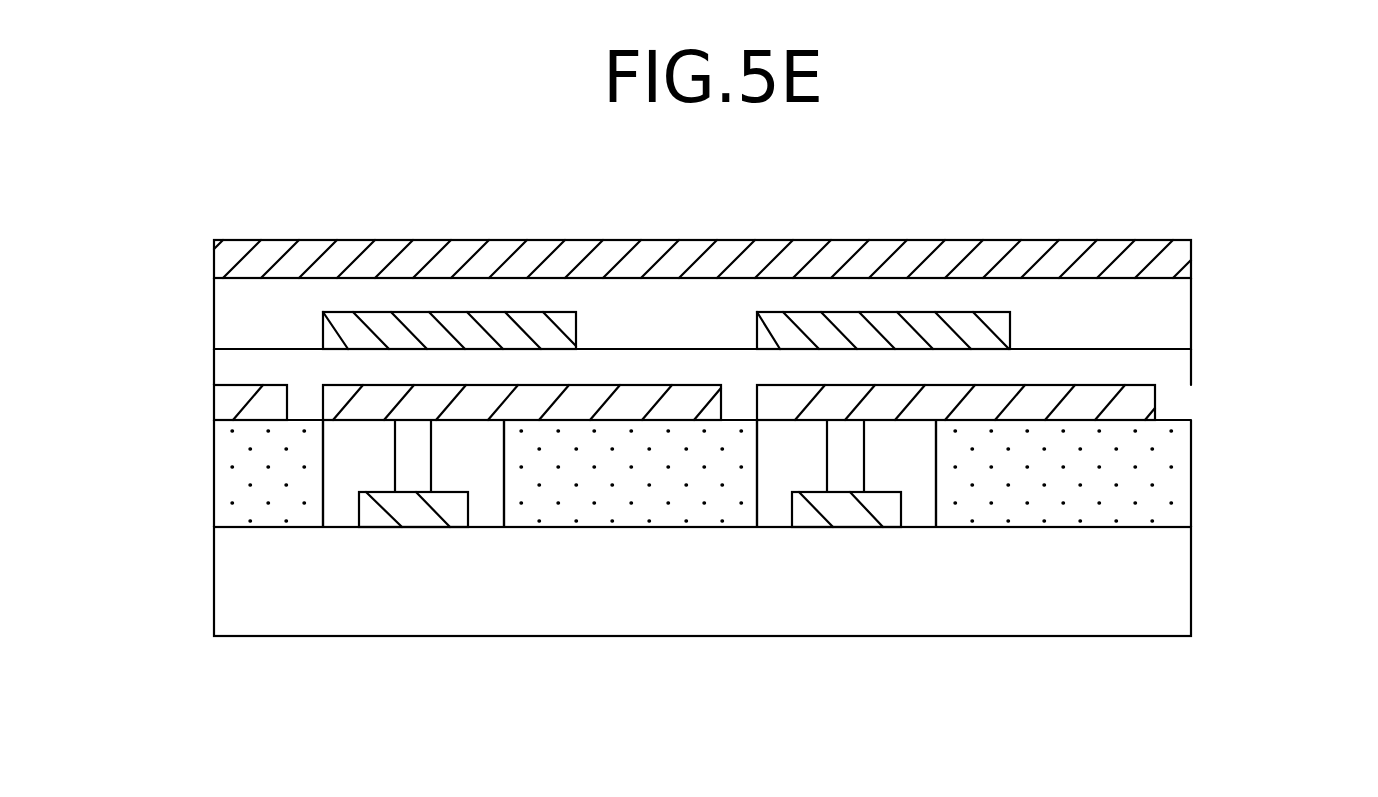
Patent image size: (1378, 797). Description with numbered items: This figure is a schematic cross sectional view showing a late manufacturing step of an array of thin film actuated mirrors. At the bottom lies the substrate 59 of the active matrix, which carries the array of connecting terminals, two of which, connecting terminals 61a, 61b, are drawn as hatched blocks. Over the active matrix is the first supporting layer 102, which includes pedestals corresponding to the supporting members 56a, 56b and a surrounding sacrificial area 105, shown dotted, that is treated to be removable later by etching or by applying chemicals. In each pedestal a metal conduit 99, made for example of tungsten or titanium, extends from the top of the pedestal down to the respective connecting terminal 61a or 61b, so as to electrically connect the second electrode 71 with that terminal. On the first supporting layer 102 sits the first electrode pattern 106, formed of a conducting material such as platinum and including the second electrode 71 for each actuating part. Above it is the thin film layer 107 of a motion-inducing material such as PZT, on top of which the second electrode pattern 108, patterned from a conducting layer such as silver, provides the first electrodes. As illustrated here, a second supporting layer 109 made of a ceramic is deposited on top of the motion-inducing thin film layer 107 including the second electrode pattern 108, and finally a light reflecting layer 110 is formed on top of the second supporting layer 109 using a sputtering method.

The light reflecting layer 110 is at (920, 257).
The second supporting layer 109 is at (1169, 317).
The second electrode pattern 108 is at (193, 318).
The thin film layer of motion-inducing material 107 is at (1166, 369).
The first electrode pattern 106 is at (696, 481).
The second electrode 71 is at (1097, 400).
The first supporting layer 102 is at (625, 598).
The sacrificial area 105 is at (646, 497).
The conduit 99 is at (413, 463).
The connecting terminal 61a is at (423, 513).
The connecting terminal 61b is at (853, 515).
The supporting member 56a is at (475, 472).
The supporting member 56b is at (912, 470).
The substrate 59 is at (238, 580).